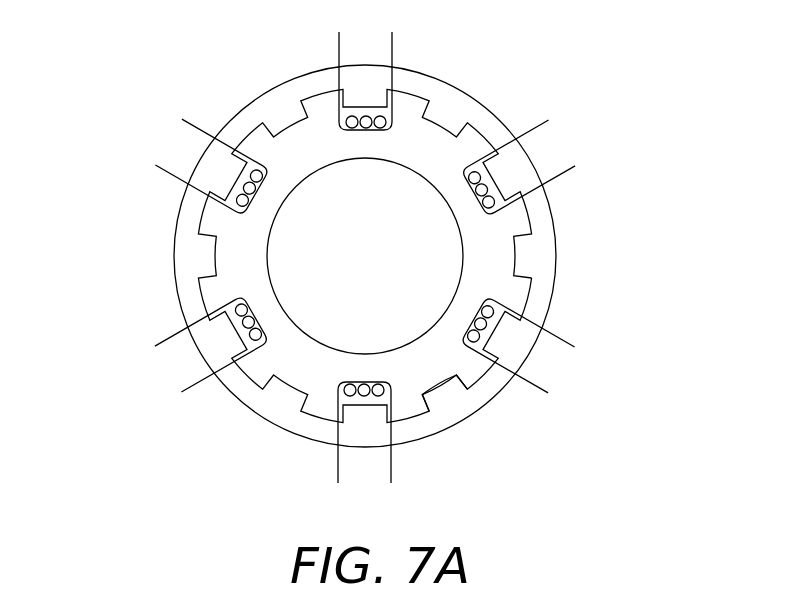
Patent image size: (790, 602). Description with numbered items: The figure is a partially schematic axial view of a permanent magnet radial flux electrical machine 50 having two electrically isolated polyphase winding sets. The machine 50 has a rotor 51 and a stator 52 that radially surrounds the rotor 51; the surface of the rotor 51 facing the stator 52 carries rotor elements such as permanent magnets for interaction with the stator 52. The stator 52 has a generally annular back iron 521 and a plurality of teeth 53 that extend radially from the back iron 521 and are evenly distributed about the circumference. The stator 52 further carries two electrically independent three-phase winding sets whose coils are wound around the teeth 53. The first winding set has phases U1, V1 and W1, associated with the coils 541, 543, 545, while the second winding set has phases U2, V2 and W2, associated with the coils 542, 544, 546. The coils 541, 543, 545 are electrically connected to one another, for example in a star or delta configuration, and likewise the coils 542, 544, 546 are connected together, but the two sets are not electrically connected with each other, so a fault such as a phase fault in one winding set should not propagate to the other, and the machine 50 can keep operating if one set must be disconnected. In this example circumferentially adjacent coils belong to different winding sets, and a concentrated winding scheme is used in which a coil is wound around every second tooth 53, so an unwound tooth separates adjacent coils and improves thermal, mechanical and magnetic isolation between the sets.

The electrical machine 50 is at (118, 55).
The rotor 51 is at (380, 266).
The stator 52 is at (436, 80).
The back iron 521 is at (480, 98).
The teeth 53 is at (458, 388).
The coil 541 is at (339, 32).
The coil 542 is at (575, 166).
The coil 543 is at (575, 346).
The coil 544 is at (392, 483).
The coil 545 is at (155, 346).
The coil 546 is at (155, 166).